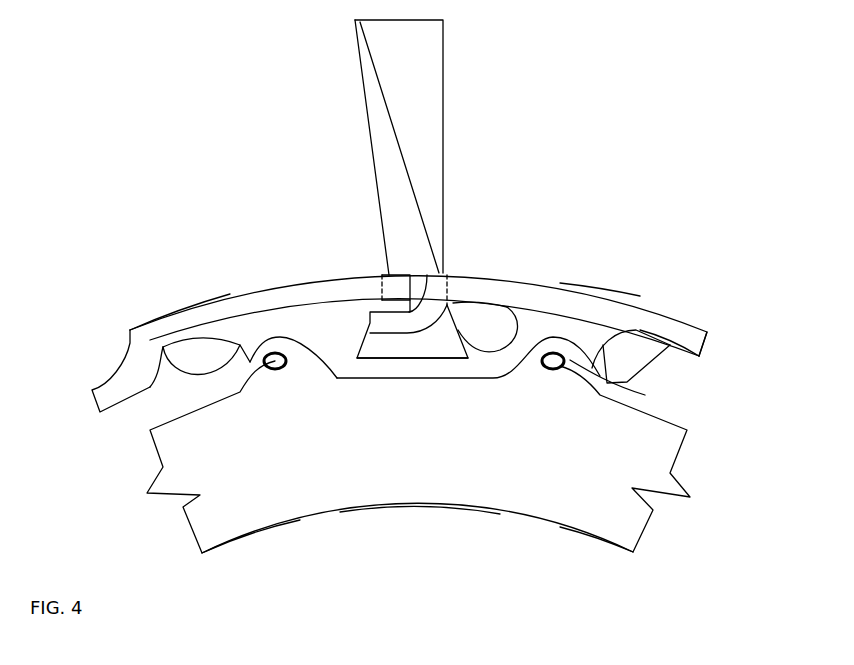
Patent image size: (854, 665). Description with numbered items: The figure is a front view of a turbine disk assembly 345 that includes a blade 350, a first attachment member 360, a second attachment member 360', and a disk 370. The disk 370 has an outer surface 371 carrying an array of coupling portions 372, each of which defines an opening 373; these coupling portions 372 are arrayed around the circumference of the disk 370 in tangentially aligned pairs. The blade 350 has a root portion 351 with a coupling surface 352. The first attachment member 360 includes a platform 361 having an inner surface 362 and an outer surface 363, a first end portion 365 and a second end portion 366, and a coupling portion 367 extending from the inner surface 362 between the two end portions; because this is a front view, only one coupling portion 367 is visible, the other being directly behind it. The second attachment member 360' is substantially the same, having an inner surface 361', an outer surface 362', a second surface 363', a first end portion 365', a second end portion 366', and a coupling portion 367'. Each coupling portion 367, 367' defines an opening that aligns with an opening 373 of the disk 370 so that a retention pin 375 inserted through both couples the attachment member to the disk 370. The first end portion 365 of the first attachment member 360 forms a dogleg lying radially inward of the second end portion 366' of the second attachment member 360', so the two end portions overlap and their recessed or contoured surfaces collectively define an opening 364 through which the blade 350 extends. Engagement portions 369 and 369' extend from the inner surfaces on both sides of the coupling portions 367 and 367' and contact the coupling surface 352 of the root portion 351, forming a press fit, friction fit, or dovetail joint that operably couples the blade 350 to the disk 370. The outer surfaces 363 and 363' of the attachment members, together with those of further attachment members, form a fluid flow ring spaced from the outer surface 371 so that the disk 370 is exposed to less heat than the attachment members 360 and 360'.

The disk assembly 345 is at (217, 77).
The blade 350 is at (460, 47).
The coupling surface 352 is at (452, 273).
The root portion 351 is at (430, 358).
The first attachment member 360 is at (431, 300).
The platform 361 is at (600, 279).
The inner surface 362 is at (480, 275).
The outer surface 363 is at (669, 309).
The opening 364 is at (404, 260).
The first end portion 365 is at (408, 427).
The second end portion 366 is at (714, 324).
The coupling portion 367 is at (503, 319).
The engagement portion 369 is at (498, 289).
The second attachment member 360' is at (179, 319).
The inner surface 361' is at (142, 333).
The outer surface 362' is at (201, 303).
The second surface 363' is at (180, 282).
The first end portion 365' is at (108, 371).
The second end portion 366' is at (367, 276).
The coupling portion 367' is at (217, 300).
The engagement portion 369' is at (293, 315).
The disk 370 is at (142, 461).
The outer surface 371 is at (475, 380).
The coupling portion 372 is at (253, 387).
The opening 373 is at (262, 362).
The retention pin 375 is at (280, 370).